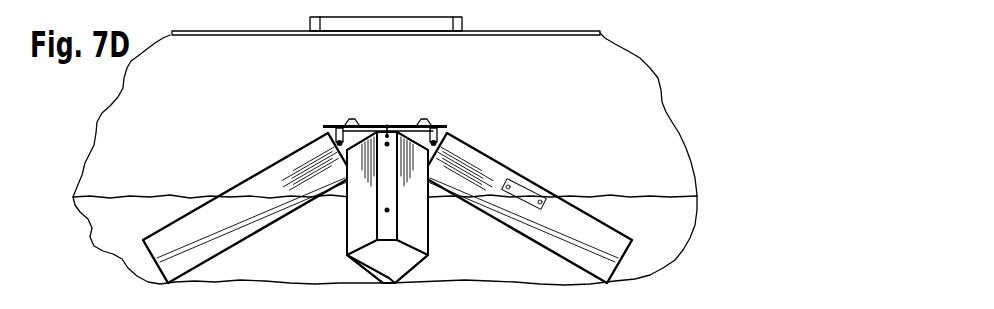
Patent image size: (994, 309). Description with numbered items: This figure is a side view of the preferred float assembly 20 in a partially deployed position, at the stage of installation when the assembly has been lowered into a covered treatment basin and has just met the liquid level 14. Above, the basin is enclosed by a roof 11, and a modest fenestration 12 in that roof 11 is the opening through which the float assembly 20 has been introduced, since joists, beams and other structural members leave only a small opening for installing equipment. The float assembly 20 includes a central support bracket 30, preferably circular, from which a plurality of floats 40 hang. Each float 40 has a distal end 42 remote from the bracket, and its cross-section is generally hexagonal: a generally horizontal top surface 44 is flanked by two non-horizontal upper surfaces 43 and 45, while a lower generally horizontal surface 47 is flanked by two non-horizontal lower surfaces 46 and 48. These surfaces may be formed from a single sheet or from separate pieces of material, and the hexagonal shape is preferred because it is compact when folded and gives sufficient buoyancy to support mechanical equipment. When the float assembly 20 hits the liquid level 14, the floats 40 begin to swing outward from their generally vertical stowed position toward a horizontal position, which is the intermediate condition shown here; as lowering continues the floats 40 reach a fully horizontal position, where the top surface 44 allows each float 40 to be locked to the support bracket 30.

The roof 11 is at (598, 31).
The fenestration 12 is at (460, 23).
The liquid level 14 is at (666, 196).
The float assembly 20 is at (554, 132).
The central support bracket 30 is at (447, 127).
The float 40 is at (275, 171).
The distal end 42 is at (423, 258).
The non-horizontal upper surface 43 is at (363, 226).
The top surface 44 is at (391, 232).
The non-horizontal upper surface 45 is at (422, 217).
The non-horizontal lower surface 46 is at (355, 273).
The lower horizontal surface 47 is at (138, 5).
The non-horizontal lower surface 48 is at (483, 293).